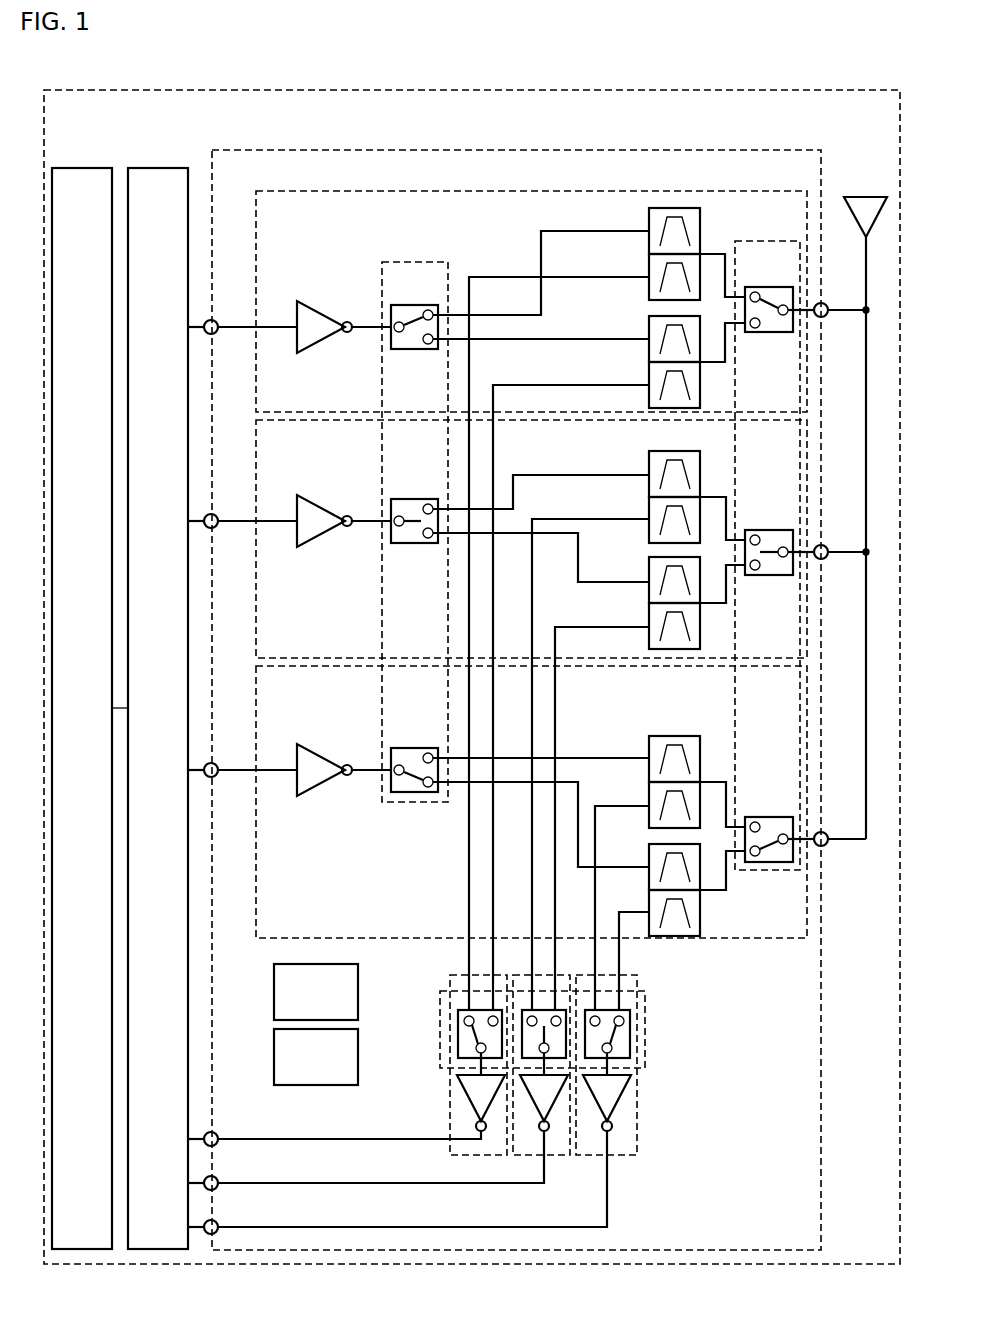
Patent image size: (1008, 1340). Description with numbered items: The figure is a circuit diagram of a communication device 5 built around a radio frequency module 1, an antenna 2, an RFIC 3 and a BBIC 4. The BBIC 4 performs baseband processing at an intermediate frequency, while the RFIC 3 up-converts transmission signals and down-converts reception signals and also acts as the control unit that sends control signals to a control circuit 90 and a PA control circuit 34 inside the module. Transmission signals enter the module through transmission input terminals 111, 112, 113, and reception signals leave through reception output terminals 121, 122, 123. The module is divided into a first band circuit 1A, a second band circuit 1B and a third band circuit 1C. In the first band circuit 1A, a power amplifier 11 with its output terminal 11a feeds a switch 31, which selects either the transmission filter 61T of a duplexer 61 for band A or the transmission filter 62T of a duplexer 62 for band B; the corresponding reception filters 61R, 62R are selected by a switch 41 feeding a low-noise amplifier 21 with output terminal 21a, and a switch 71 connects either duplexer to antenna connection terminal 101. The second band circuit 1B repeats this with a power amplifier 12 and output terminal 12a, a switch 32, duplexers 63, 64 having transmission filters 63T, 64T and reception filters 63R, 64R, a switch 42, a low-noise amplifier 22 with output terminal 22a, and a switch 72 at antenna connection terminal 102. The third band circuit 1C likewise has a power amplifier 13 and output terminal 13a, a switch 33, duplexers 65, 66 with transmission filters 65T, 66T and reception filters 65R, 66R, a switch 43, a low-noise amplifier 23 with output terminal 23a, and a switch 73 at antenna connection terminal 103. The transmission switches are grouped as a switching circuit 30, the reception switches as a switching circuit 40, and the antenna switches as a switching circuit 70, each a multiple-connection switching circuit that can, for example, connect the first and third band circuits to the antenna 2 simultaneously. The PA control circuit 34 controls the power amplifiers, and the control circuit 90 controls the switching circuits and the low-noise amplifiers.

The communication device 5 is at (866, 91).
The radio frequency module 1 is at (794, 151).
The antenna 2 is at (870, 197).
The RFIC 3 is at (163, 168).
The BBIC 4 is at (85, 168).
The first band circuit 1A is at (256, 214).
The second band circuit 1B is at (256, 442).
The third band circuit 1C is at (256, 688).
The power amplifier 11 is at (344, 329).
The power amplifier 12 is at (344, 523).
The power amplifier 13 is at (344, 772).
The output terminal 11a is at (347, 333).
The output terminal 12a is at (347, 527).
The output terminal 13a is at (347, 776).
The low-noise amplifier 21 is at (471, 1117).
The low-noise amplifier 22 is at (558, 1118).
The low-noise amplifier 23 is at (628, 1106).
The output terminal 21a is at (484, 1133).
The output terminal 22a is at (549, 1132).
The output terminal 23a is at (613, 1128).
The switching circuit 30 is at (415, 518).
The switch 31 is at (425, 300).
The switch 32 is at (425, 493).
The switch 33 is at (425, 743).
The PA control circuit 34 is at (358, 982).
The switching circuit 40 is at (519, 1009).
The switch 41 is at (466, 1010).
The switch 42 is at (528, 1010).
The switch 43 is at (592, 1010).
The duplexer 61 is at (672, 252).
The duplexer 62 is at (663, 363).
The duplexer 63 is at (663, 495).
The duplexer 64 is at (663, 604).
The duplexer 65 is at (663, 780).
The duplexer 66 is at (672, 885).
The transmission filter 61T is at (649, 223).
The reception filter 61R is at (649, 269).
The transmission filter 62T is at (649, 331).
The reception filter 62R is at (649, 378).
The transmission filter 63T is at (649, 466).
The reception filter 63R is at (649, 512).
The transmission filter 64T is at (649, 573).
The reception filter 64R is at (649, 619).
The transmission filter 65T is at (649, 751).
The reception filter 65R is at (649, 798).
The transmission filter 66T is at (649, 858).
The reception filter 66R is at (649, 904).
The switching circuit 70 is at (767, 537).
The switch 71 is at (774, 287).
The switch 72 is at (774, 530).
The switch 73 is at (774, 817).
The control circuit 90 is at (358, 1048).
The antenna connection terminal 101 is at (824, 303).
The antenna connection terminal 102 is at (824, 545).
The antenna connection terminal 103 is at (824, 832).
The transmission input terminal 111 is at (216, 320).
The transmission input terminal 112 is at (216, 514).
The transmission input terminal 113 is at (216, 763).
The reception output terminal 121 is at (216, 1133).
The reception output terminal 122 is at (216, 1177).
The reception output terminal 123 is at (216, 1221).